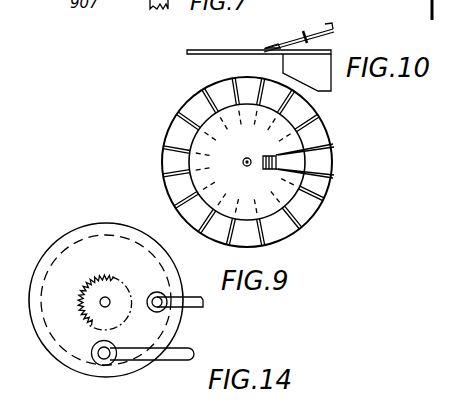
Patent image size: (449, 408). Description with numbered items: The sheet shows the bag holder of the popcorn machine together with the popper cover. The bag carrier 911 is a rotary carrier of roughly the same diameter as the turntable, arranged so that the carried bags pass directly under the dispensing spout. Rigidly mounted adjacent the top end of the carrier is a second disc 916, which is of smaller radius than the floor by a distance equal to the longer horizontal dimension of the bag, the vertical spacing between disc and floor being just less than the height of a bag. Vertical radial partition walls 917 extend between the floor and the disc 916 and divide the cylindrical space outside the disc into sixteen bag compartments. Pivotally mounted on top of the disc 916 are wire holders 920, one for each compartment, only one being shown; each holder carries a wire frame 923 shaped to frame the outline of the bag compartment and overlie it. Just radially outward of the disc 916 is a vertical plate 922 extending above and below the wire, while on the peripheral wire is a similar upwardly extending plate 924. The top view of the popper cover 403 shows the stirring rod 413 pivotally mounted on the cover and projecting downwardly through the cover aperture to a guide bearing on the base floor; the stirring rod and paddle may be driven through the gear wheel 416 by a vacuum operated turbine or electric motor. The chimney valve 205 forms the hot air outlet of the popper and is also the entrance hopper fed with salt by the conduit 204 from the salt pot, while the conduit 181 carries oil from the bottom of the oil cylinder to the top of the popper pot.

In FIG. 9, the bag carrier 911 is at (282, 164).
In FIG. 9, the second disc 916 is at (298, 138).
In FIG. 9, the vertical radial partition walls 917 is at (298, 228).
In FIG. 9, the wire frame 923 is at (336, 147).
In FIG. 10, the wire holders 920 is at (309, 28).
In FIG. 10, the vertical plate 922 is at (326, 42).
In FIG. 10, the upwardly extending plate 924 is at (338, 24).
In FIG. 14, the cover 403 is at (55, 355).
In FIG. 14, the stirring rod 413 is at (107, 298).
In FIG. 14, the gear wheel 416 is at (95, 280).
In FIG. 14, the conduit 181 is at (190, 305).
In FIG. 14, the conduit 204 is at (186, 355).
In FIG. 14, the chimney valve / entrance hopper 205 is at (115, 364).